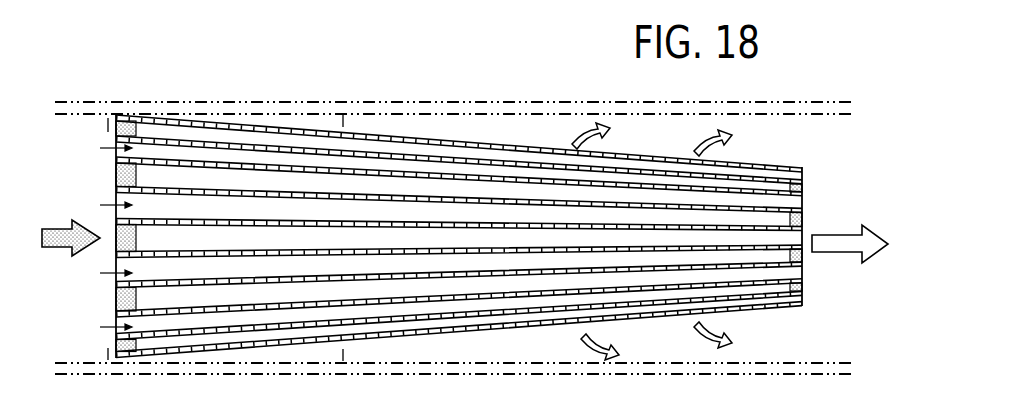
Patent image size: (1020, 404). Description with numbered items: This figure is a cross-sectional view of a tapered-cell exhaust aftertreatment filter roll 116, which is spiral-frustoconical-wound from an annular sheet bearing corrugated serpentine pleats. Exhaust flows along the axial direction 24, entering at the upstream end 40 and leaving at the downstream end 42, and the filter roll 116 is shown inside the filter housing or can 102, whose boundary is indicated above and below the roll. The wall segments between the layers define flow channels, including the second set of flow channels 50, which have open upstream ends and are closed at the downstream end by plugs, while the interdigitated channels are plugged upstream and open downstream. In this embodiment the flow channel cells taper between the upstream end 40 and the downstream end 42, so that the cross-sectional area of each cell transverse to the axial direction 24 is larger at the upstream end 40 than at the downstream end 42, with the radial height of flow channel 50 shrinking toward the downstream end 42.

The axial direction 24 is at (52, 249).
The upstream end 40 is at (115, 186).
The downstream end 42 is at (803, 207).
The second set of flow channels 50 is at (300, 267).
The filter housing or can 102 is at (796, 102).
The filter roll 116 is at (412, 136).